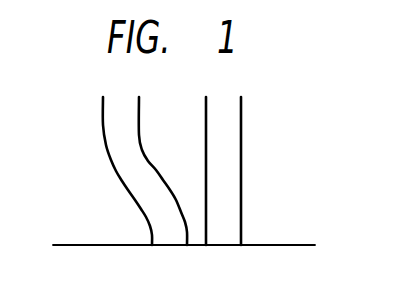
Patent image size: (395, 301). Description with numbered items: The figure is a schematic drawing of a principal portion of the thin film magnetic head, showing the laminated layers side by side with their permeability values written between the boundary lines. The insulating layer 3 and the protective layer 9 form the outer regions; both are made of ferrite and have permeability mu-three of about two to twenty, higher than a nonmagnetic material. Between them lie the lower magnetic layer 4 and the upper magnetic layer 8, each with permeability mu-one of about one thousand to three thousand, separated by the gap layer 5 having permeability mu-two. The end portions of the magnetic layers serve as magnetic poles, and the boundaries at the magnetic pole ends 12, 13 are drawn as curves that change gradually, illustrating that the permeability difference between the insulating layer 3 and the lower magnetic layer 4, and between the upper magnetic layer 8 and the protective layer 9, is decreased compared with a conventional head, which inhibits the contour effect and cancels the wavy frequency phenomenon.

The protective layer 9 is at (90, 240).
The magnetic pole end 13 is at (152, 245).
The upper magnetic layer 8 is at (176, 238).
The gap layer 5 is at (198, 236).
The lower magnetic layer 4 is at (223, 236).
The magnetic pole end 12 is at (241, 245).
The insulating layer 3 is at (278, 235).